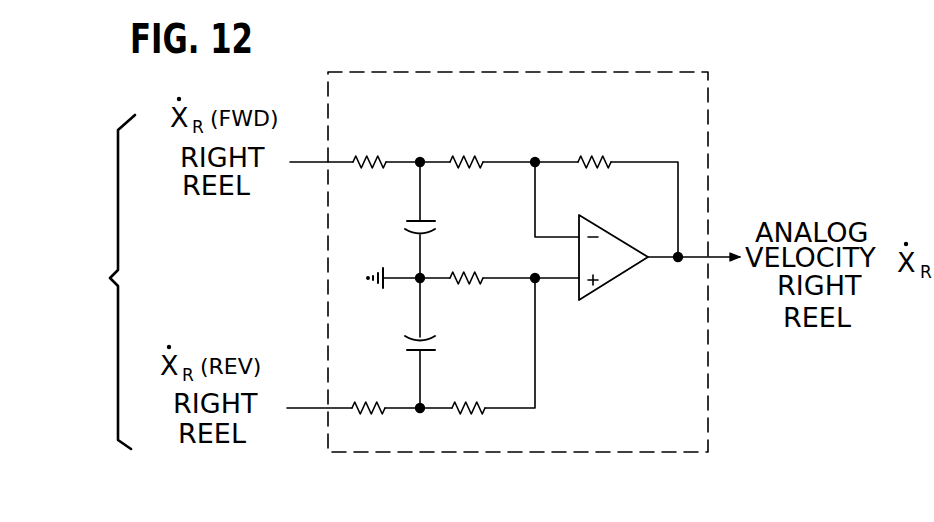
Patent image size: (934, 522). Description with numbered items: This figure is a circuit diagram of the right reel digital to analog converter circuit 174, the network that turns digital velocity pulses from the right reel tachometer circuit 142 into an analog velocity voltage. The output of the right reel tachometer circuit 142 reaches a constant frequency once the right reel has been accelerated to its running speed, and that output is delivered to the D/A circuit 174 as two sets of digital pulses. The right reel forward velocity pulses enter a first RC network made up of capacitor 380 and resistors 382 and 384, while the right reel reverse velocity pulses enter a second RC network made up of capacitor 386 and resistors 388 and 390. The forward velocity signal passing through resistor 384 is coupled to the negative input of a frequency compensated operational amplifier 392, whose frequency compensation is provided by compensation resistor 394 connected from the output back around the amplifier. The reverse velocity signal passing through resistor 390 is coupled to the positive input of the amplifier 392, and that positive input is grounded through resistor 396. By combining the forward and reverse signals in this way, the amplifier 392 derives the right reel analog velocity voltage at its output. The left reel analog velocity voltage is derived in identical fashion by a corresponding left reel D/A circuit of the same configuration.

The right reel tachometer circuit 142 is at (85, 282).
The right reel digital to analog converter circuit 174 is at (462, 72).
The capacitor 380 is at (435, 237).
The resistor 382 is at (362, 158).
The resistor 384 is at (470, 158).
The capacitor 386 is at (433, 350).
The resistor 388 is at (380, 413).
The resistor 390 is at (462, 415).
The frequency compensated operational amplifier 392 is at (612, 266).
The compensation resistor 394 is at (598, 157).
The resistor 396 is at (452, 272).